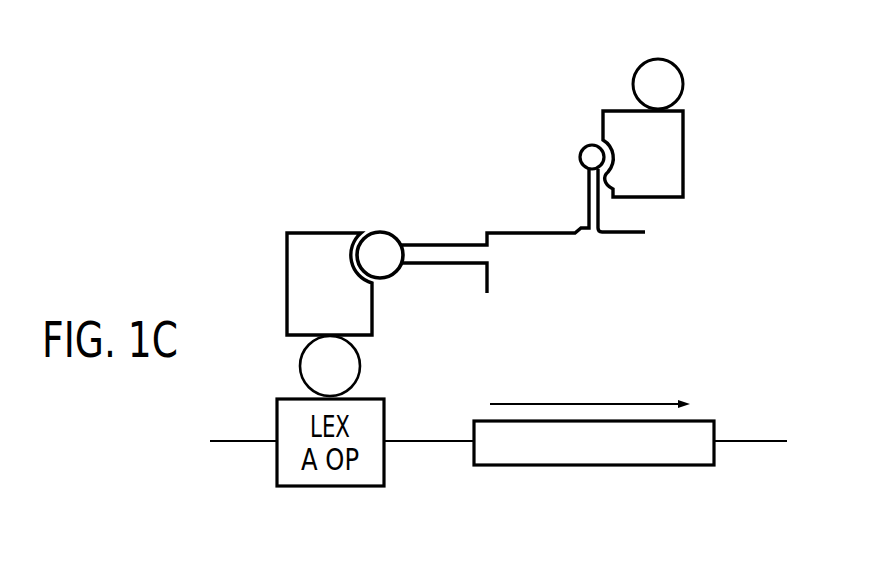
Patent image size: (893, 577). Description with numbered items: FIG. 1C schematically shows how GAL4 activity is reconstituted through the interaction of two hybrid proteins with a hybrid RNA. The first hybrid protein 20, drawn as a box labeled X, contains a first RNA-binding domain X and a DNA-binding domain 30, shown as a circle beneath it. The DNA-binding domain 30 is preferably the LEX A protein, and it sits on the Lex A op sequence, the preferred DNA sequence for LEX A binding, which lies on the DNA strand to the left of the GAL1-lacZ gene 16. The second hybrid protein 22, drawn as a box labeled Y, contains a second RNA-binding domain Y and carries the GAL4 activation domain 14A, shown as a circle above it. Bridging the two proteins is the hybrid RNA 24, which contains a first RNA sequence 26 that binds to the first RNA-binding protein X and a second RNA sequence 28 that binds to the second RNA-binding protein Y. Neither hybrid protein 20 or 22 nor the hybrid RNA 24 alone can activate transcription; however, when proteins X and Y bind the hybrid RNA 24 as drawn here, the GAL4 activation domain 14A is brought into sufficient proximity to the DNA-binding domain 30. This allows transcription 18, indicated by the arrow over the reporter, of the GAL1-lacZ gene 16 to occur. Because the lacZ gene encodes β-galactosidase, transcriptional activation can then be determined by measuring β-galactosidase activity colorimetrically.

The GAL4 activation domain 14A is at (676, 66).
The second hybrid protein 22 is at (692, 155).
The second RNA sequence 28 is at (589, 188).
The first RNA sequence 26 is at (378, 232).
The first hybrid protein 20 is at (382, 316).
The hybrid RNA 24 is at (535, 243).
The DNA-binding domain 30 is at (361, 368).
The transcription arrow 18 is at (580, 390).
The GAL1-lacZ gene 16 is at (608, 474).